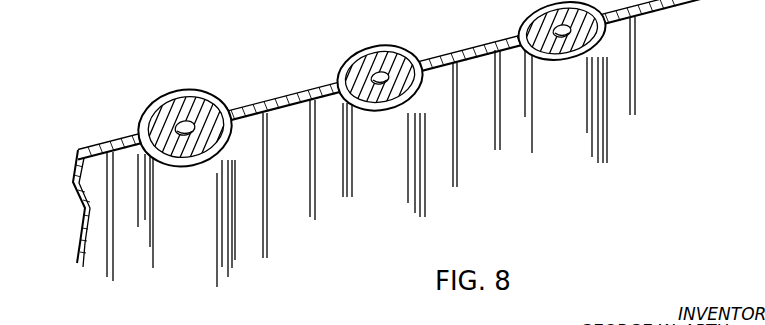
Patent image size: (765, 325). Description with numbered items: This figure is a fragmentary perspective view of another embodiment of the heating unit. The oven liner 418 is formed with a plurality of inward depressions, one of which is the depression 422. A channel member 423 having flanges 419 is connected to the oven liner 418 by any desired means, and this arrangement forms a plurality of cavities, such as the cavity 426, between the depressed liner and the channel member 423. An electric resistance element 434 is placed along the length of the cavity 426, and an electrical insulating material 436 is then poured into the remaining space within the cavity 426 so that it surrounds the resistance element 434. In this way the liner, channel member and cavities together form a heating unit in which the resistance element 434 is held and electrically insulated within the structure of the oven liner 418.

The oven liner 418 is at (97, 171).
The flanges 419 is at (126, 213).
The depression 422 is at (215, 115).
The channel member 423 is at (182, 208).
The cavity 426 is at (197, 112).
The electric resistance element 434 is at (182, 121).
The electrical insulating material 436 is at (148, 110).